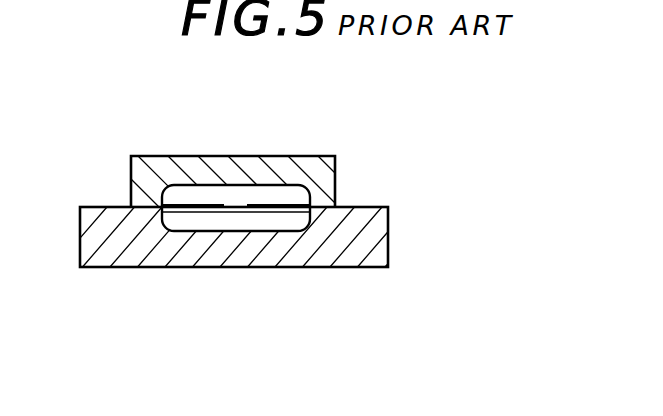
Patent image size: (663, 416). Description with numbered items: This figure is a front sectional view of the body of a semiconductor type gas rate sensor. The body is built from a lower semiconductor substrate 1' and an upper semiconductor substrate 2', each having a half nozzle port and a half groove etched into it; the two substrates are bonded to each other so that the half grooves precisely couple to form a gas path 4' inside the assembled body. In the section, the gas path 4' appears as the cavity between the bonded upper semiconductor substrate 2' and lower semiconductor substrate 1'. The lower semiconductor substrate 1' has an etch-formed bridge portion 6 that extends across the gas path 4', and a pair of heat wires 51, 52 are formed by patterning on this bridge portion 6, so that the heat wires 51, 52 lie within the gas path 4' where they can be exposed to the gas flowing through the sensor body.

The lower semiconductor substrate 1' is at (275, 237).
The upper semiconductor substrate 2' is at (275, 174).
The gas path 4' is at (236, 156).
The heat wire 51 is at (190, 205).
The heat wire 52 is at (283, 205).
The bridge portion 6 is at (233, 212).